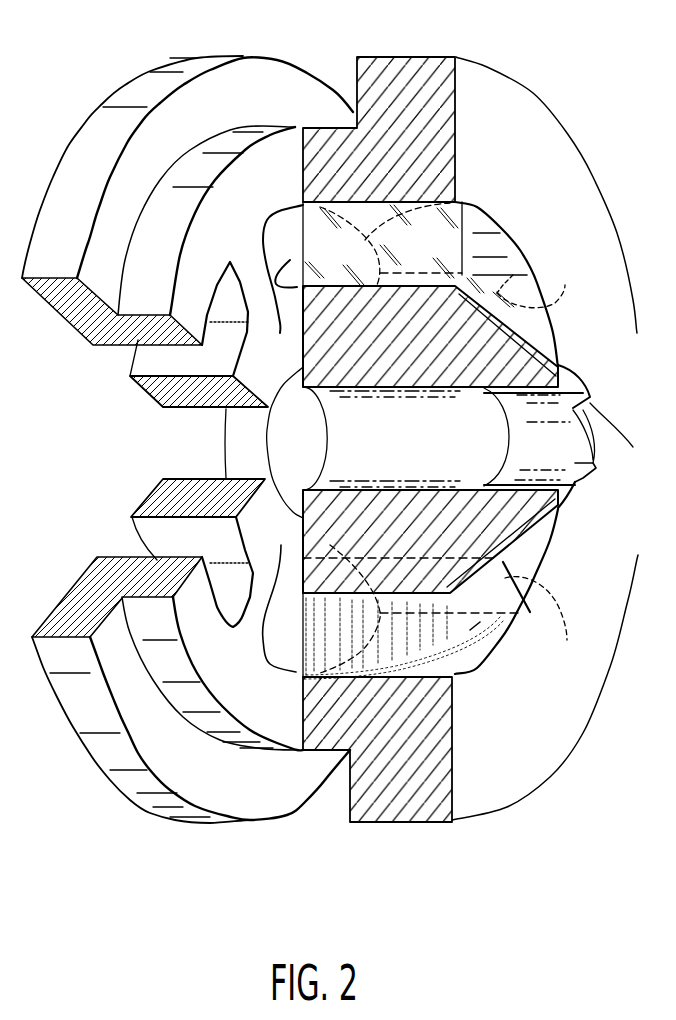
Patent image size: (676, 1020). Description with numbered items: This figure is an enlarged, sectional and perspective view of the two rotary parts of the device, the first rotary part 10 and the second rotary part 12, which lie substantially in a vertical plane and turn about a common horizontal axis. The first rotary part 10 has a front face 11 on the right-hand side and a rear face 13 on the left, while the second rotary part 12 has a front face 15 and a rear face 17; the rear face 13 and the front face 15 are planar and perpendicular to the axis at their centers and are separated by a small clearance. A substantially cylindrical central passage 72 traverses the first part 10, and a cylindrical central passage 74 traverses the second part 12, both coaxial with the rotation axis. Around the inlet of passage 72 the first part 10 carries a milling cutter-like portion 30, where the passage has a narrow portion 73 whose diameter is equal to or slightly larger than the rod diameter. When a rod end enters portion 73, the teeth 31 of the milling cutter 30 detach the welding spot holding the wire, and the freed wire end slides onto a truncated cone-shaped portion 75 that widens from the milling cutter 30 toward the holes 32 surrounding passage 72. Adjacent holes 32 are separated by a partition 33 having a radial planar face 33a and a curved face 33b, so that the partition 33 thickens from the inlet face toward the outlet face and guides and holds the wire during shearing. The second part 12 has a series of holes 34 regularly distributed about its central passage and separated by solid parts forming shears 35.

The first rotary part 10 is at (440, 55).
The front face 11 is at (525, 750).
The second rotary part 12 is at (128, 75).
The rear face 13 is at (297, 718).
The front face 15 is at (132, 523).
The rear face 17 is at (110, 775).
The milling cutter-like portion 30 is at (591, 495).
The teeth 31 is at (633, 447).
The holes 32 is at (482, 250).
The partition 33 is at (530, 277).
The planar face 33a is at (493, 279).
The curved face 33b is at (530, 276).
The holes 34 is at (237, 297).
The shears 35 is at (255, 263).
The central passage 72 is at (384, 454).
The narrow portion 73 is at (530, 485).
The central passage 74 is at (247, 438).
The truncated cone-shaped portion 75 is at (522, 328).